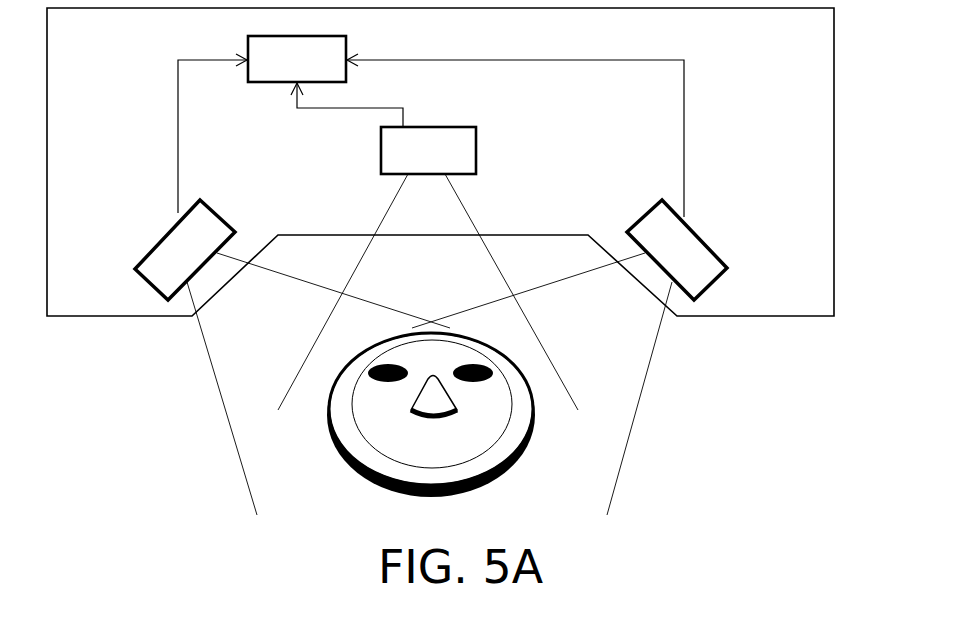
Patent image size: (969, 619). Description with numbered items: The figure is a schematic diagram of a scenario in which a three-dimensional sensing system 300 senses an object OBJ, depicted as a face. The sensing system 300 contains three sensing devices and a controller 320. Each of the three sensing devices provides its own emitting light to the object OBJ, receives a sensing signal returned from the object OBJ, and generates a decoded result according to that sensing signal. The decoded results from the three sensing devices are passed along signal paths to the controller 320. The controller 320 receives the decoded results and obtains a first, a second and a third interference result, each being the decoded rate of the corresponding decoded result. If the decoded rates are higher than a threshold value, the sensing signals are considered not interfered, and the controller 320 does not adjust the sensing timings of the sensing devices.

The 3D sensing system 300 is at (835, 118).
The controller 320 is at (351, 40).
The object OBJ is at (448, 498).